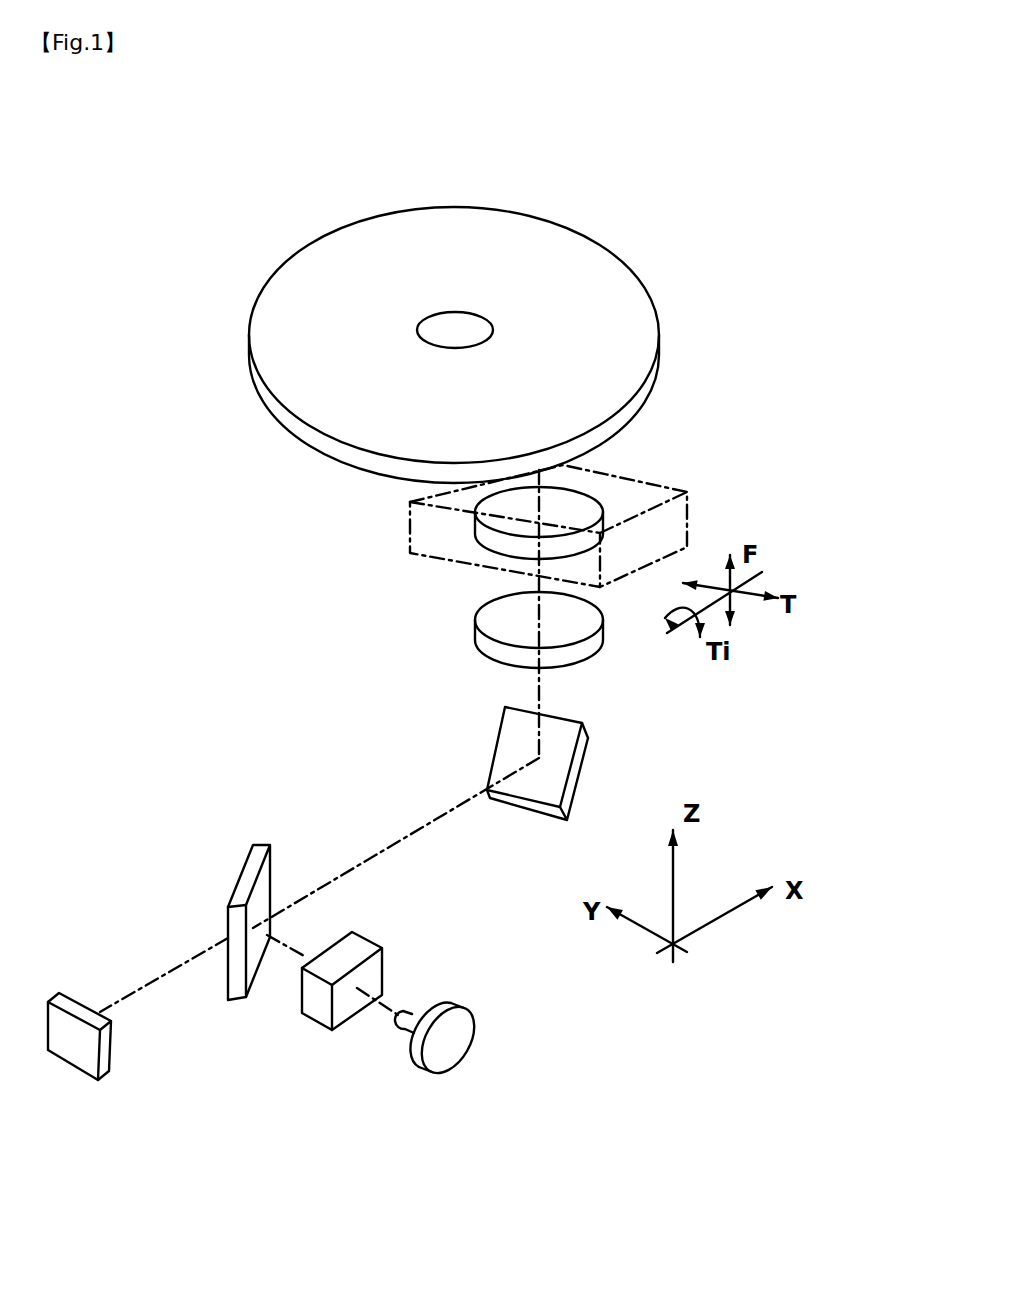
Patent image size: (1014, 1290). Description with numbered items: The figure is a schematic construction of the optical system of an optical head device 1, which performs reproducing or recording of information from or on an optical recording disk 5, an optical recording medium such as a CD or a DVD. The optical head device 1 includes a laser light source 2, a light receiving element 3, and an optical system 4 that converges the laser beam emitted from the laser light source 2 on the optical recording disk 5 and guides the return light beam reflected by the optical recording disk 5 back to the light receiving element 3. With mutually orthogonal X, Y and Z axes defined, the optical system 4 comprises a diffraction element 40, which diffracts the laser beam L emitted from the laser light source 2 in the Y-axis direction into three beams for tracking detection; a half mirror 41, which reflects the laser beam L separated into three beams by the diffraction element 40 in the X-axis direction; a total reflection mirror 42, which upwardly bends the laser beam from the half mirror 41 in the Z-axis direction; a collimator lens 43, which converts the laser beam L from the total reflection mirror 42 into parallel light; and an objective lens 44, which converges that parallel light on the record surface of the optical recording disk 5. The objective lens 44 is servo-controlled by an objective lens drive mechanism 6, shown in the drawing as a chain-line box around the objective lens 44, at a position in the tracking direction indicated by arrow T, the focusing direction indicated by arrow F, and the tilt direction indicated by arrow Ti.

The optical head device 1 is at (756, 448).
The laser light source 2 is at (445, 1047).
The light receiving element 3 is at (108, 1052).
The optical system 4 is at (235, 518).
The diffraction element 40 is at (350, 960).
The half mirror 41 is at (257, 857).
The total reflection mirror 42 is at (495, 738).
The collimator lens 43 is at (493, 648).
The objective lens 44 is at (493, 540).
The optical recording disk 5 is at (622, 302).
The objective lens drive mechanism 6 is at (692, 524).
The laser beam L is at (423, 827).